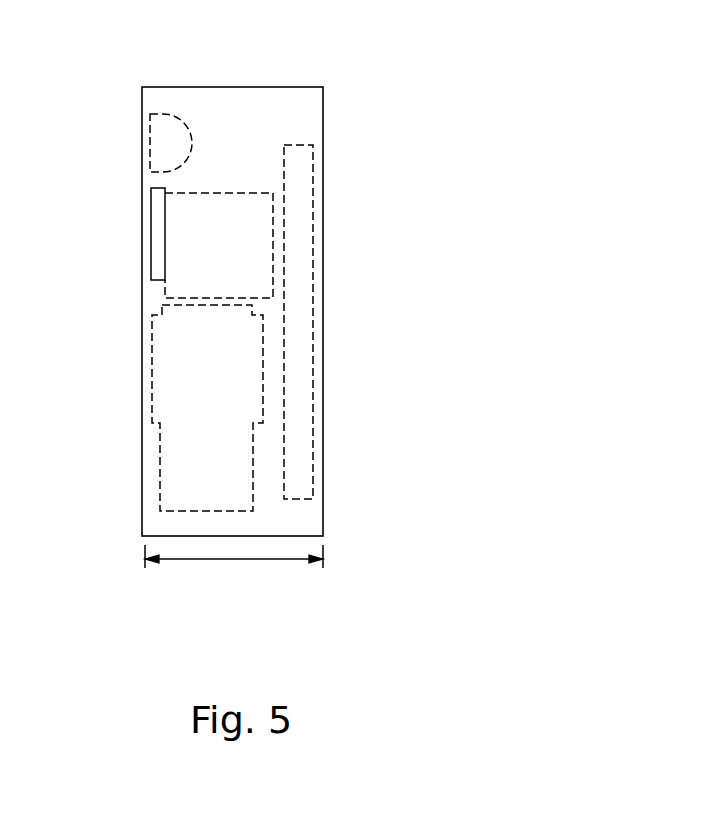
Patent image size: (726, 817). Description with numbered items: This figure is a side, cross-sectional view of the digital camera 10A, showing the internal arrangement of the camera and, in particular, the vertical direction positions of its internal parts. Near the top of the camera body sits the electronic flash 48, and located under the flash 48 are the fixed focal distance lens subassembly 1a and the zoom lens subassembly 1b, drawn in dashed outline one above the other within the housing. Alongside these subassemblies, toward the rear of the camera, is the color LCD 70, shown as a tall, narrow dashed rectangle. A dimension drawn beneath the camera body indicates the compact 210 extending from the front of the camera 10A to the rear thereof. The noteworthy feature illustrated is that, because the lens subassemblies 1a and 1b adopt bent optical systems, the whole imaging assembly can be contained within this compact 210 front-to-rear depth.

The digital camera 10A is at (371, 92).
The electronic flash 48 is at (160, 144).
The fixed focal distance lens subassembly 1a is at (192, 244).
The zoom lens subassembly 1b is at (183, 402).
The color LCD 70 is at (300, 330).
The compact 210 is at (242, 560).